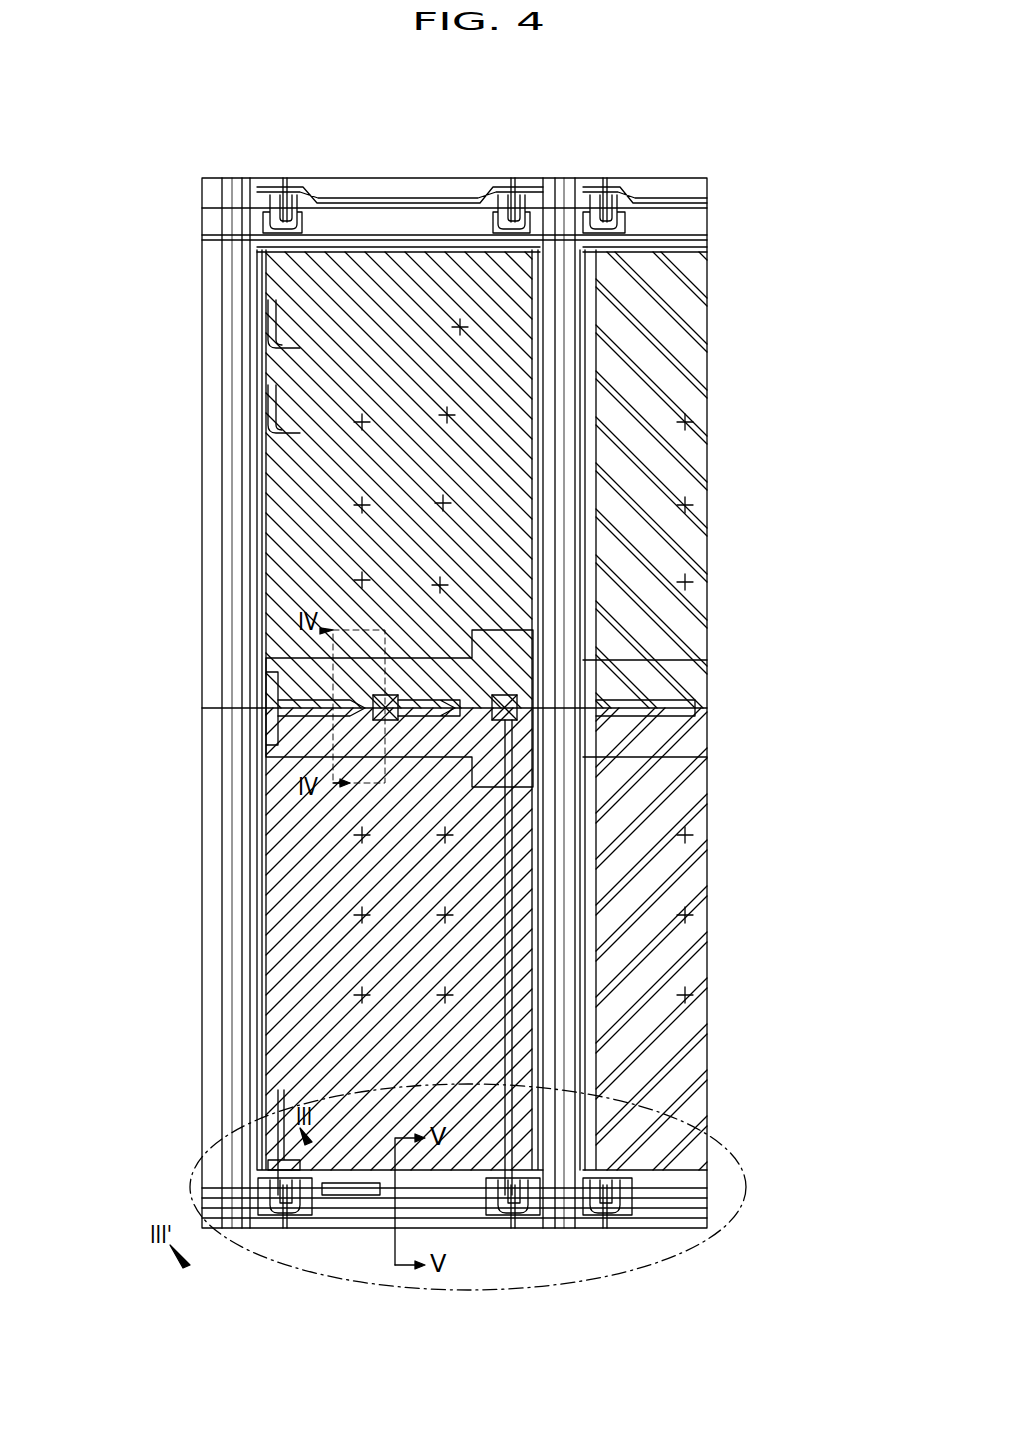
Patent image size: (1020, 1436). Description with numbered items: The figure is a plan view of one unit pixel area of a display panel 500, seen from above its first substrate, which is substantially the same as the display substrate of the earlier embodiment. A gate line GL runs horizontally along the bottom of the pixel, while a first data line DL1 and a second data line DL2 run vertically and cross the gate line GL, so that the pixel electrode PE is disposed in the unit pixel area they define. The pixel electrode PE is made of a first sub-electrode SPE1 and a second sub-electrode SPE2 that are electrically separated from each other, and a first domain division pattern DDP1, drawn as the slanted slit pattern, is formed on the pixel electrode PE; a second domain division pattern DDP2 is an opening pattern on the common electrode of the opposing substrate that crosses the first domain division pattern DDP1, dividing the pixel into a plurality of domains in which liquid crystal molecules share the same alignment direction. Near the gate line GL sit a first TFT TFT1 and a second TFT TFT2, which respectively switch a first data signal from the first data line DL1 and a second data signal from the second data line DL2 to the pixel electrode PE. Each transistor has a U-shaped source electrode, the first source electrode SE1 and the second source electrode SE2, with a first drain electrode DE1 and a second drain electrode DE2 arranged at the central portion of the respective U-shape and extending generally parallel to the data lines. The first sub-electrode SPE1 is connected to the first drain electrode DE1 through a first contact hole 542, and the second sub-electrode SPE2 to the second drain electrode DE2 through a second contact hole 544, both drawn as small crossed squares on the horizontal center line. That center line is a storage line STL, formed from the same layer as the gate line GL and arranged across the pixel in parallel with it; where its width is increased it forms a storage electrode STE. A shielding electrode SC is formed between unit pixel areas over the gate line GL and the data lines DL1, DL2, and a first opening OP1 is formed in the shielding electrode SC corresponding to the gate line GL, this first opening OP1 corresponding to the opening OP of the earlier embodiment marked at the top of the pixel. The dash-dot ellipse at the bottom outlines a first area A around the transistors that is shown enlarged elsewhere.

The display panel 500 is at (476, 82).
The gate line GL is at (215, 220).
The opening OP is at (398, 224).
The second domain division pattern DDP2 is at (300, 330).
The first domain division pattern DDP1 is at (300, 410).
The second sub-electrode SPE2 is at (285, 455).
The first sub-electrode SPE1 is at (290, 547).
The pixel electrode PE is at (384, 710).
The storage electrode STE is at (285, 650).
The first contact hole 542 is at (365, 695).
The second contact hole 544 is at (497, 697).
The storage line STL is at (220, 708).
The shielding electrode SC is at (210, 795).
The first drain electrode DE1 is at (275, 1082).
The second drain electrode DE2 is at (520, 1045).
The first TFT TFT1 is at (262, 1187).
The second TFT TFT2 is at (505, 1228).
The first source electrode SE1 is at (310, 1228).
The second source electrode SE2 is at (545, 1228).
The first opening OP1 is at (345, 1222).
The first data line DL1 is at (242, 1228).
The second data line DL2 is at (560, 1228).
The first area A is at (745, 1190).